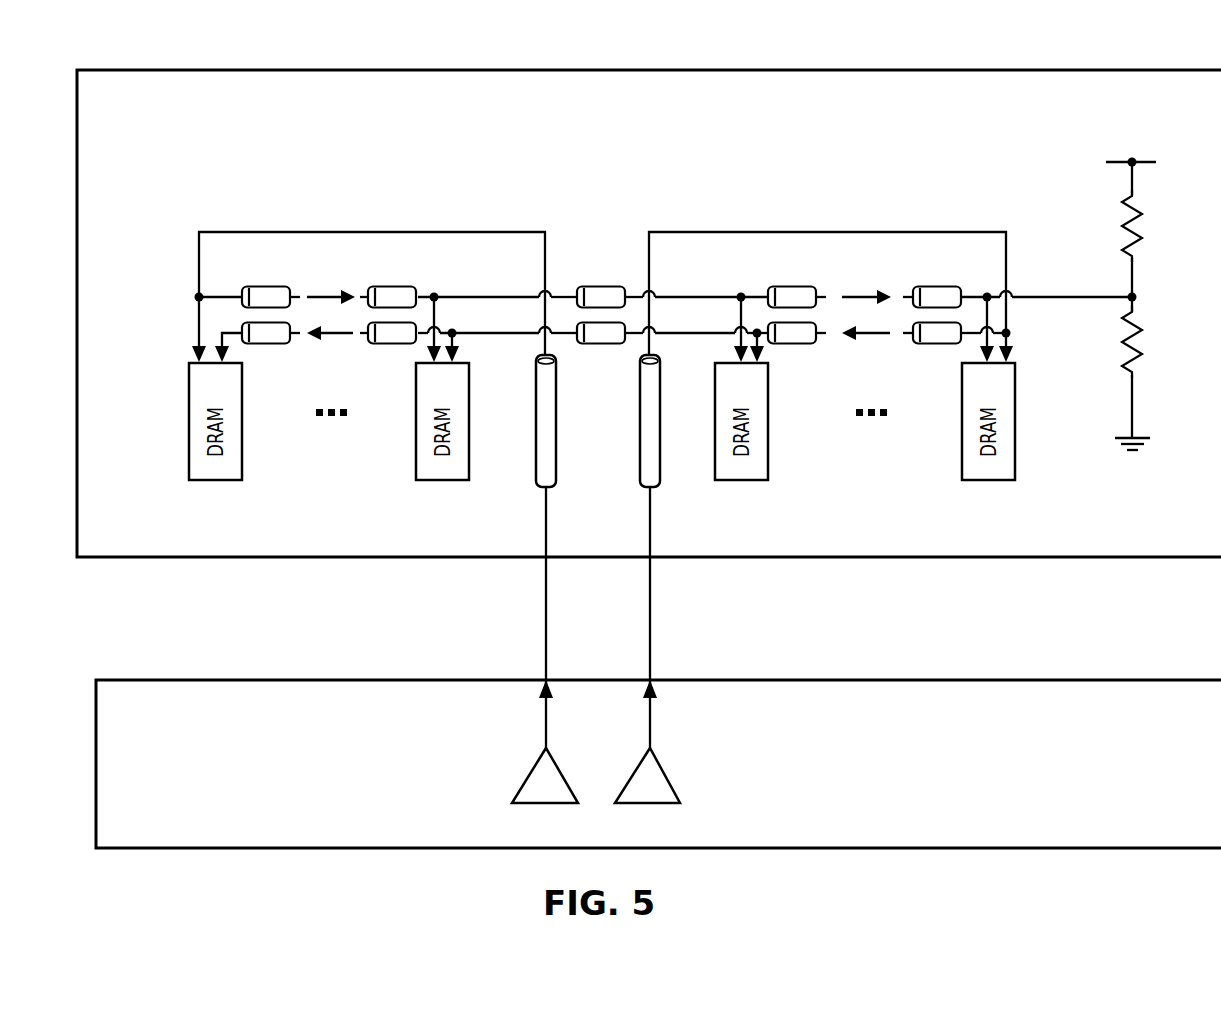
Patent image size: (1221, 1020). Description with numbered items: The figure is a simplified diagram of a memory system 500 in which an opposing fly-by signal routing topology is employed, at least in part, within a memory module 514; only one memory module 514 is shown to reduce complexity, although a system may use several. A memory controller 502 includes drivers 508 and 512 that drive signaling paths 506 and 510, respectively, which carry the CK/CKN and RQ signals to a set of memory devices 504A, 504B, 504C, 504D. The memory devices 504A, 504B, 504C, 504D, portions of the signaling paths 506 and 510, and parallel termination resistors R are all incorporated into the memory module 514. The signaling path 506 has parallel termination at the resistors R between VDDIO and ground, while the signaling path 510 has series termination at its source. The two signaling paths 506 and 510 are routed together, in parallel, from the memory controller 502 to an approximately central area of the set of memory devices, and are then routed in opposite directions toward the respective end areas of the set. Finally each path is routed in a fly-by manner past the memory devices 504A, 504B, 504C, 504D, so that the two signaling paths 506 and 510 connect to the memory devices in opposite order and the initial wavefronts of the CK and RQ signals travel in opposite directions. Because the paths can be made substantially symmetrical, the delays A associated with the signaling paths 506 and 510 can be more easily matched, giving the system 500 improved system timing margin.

The memory system 500 is at (626, 44).
The memory module 514 is at (127, 134).
The memory controller 502 is at (1171, 746).
The memory device 504A is at (232, 483).
The memory device 504B is at (436, 483).
The memory device 504C is at (735, 483).
The memory device 504D is at (980, 483).
The signaling path 506 is at (543, 605).
The driver 508 is at (520, 782).
The signaling path 510 is at (652, 605).
The driver 512 is at (672, 782).